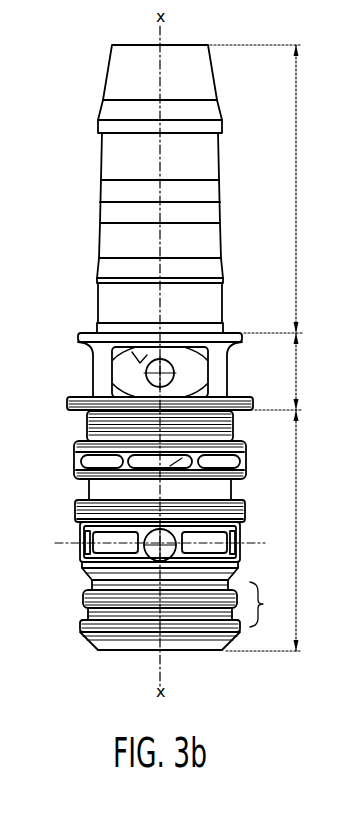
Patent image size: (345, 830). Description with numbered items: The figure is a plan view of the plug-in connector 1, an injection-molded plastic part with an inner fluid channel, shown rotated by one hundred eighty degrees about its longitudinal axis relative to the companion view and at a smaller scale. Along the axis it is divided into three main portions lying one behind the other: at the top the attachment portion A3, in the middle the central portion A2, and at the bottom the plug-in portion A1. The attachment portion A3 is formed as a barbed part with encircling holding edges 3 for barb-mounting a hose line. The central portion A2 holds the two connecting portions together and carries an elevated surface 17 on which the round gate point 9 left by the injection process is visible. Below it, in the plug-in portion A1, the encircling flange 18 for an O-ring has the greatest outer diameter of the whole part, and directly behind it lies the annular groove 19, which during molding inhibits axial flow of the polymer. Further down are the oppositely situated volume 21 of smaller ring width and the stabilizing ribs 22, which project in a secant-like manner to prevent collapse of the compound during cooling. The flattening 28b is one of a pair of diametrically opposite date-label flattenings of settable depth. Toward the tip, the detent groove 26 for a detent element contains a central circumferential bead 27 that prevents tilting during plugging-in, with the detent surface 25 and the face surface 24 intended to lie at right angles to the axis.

The plug-in connector 1 is at (77, 683).
The holding edges 3 is at (99, 130).
The gate point 9 is at (112, 380).
The elevated surface 17 is at (105, 352).
The encircling flange 18 is at (67, 405).
The annular groove 19 is at (110, 241).
The oppositely situated volume 21 is at (240, 447).
The stabilizing ribs 22 is at (118, 472).
The face surface 24 is at (131, 653).
The detent surface 25 is at (88, 614).
The detent groove 26 is at (269, 604).
The circumferential bead 27 is at (84, 598).
The flattening 28b is at (80, 542).
The plug-in portion A1 is at (296, 492).
The central portion A2 is at (296, 375).
The attachment portion A3 is at (296, 128).